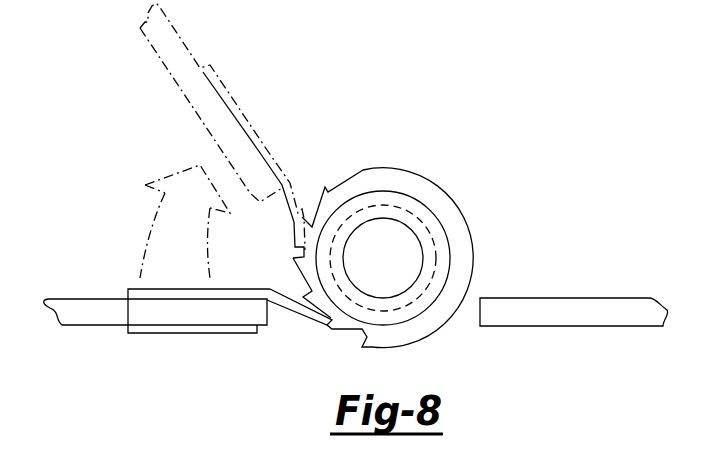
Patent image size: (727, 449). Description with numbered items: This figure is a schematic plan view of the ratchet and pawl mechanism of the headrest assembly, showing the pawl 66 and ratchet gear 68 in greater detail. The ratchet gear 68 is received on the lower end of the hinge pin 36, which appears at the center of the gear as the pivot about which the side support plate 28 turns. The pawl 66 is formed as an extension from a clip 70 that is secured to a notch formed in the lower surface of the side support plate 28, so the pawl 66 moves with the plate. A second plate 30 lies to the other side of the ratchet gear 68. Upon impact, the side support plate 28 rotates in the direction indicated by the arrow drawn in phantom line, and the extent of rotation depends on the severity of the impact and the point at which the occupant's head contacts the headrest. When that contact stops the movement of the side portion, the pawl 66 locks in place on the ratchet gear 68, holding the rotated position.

The side support plate 28 is at (77, 318).
The second plate 30 is at (538, 307).
The hinge pin 36 is at (412, 250).
The pawl 66 is at (292, 308).
The ratchet gear 68 is at (370, 178).
The clip 70 is at (167, 332).